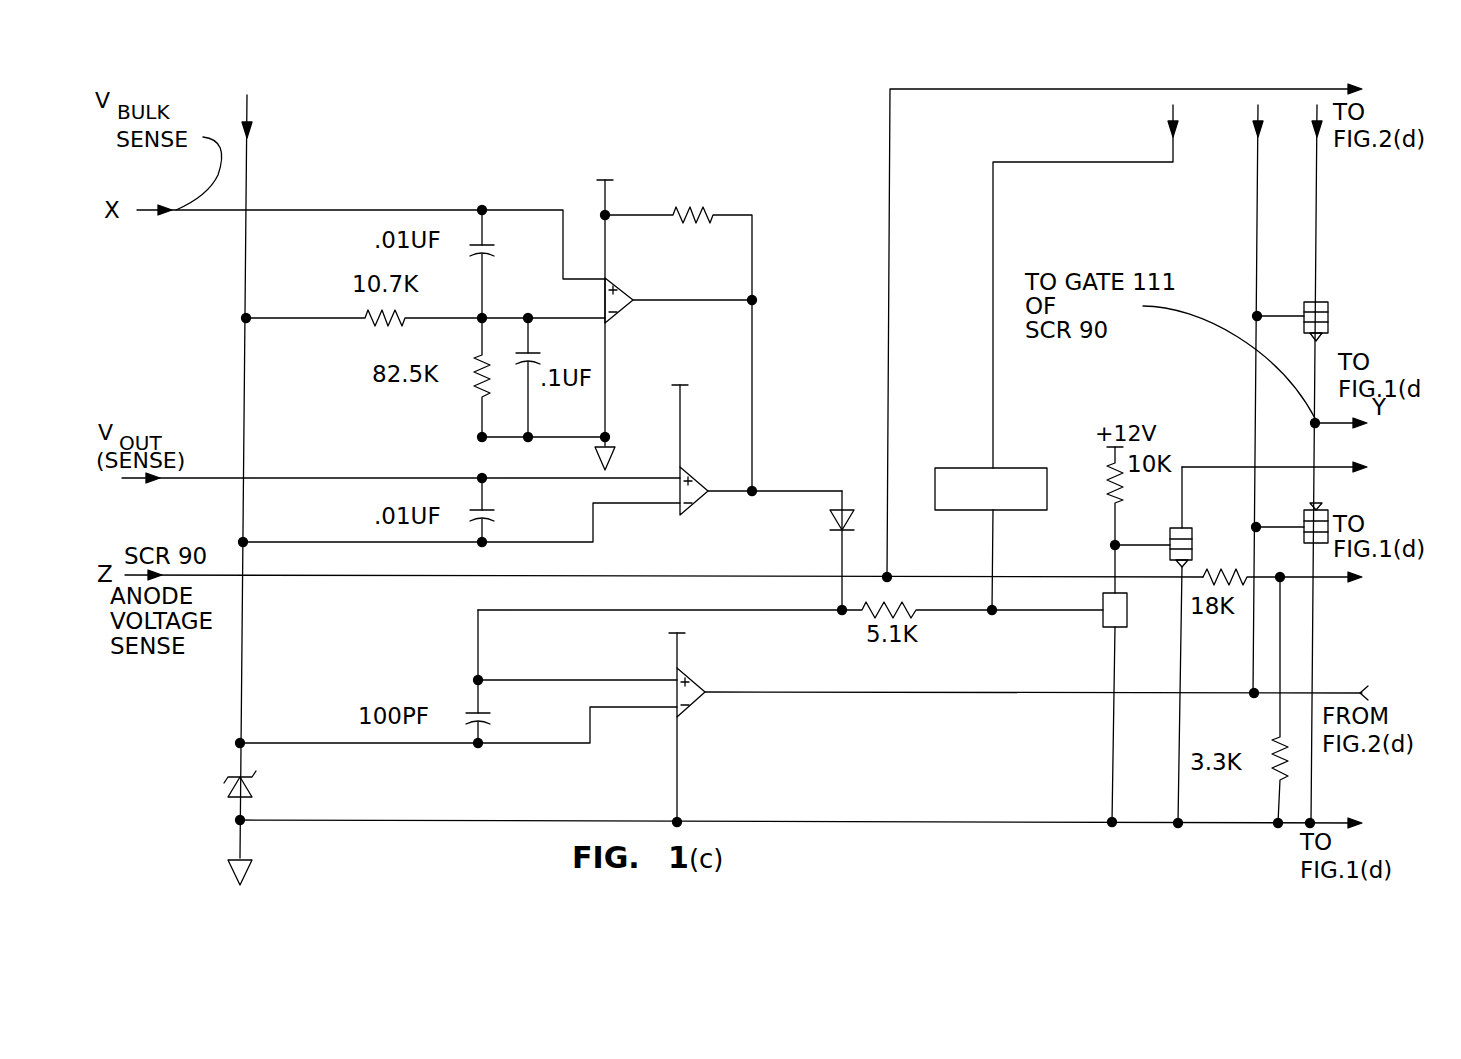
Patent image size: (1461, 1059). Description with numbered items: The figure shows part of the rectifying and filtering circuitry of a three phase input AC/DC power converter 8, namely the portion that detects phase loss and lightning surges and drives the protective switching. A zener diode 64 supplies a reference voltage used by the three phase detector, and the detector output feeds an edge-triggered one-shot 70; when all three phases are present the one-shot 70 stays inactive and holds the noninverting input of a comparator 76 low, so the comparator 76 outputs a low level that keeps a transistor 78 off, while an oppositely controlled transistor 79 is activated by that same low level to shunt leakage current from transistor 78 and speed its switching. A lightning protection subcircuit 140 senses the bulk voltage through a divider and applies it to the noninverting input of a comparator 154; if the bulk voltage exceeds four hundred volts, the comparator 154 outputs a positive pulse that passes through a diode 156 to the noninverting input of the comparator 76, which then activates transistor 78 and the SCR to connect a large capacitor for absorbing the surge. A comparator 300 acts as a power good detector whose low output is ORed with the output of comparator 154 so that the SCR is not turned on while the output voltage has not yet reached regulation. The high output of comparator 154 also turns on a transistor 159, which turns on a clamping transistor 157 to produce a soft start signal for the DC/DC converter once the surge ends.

The three phase input AC/DC power converter 8 is at (1012, 74).
The subcircuit 140 is at (690, 149).
The comparator 154 is at (622, 290).
The comparator 300 is at (698, 478).
The diode 156 is at (848, 508).
The one-shot 70 is at (976, 468).
The transistor 78 is at (1320, 300).
The transistor 79 is at (1321, 504).
The clamping transistor 157 is at (1194, 548).
The transistor 159 is at (1105, 628).
The comparator 76 is at (700, 684).
The zener diode 64 is at (228, 791).